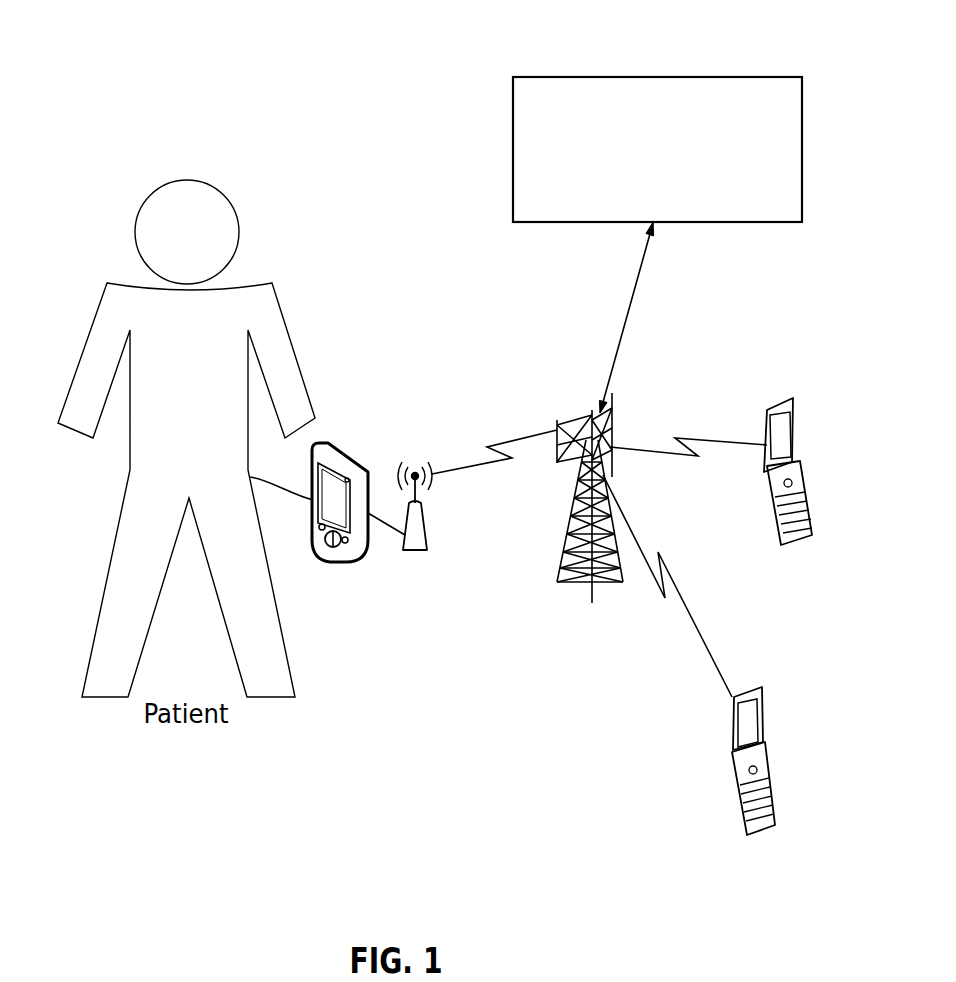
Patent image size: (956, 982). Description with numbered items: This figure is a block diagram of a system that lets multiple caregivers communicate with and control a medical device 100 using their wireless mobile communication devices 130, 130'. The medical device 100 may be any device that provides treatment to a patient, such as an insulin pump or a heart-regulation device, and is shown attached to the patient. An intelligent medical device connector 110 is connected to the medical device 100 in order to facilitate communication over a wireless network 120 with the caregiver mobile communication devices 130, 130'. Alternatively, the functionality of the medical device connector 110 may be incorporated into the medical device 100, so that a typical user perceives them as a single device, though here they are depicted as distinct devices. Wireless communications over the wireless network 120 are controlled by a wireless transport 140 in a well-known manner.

The medical device 100 is at (348, 448).
The intelligent medical device connector (MDC) 110 is at (418, 553).
The wireless network 120 is at (577, 517).
The wireless mobile communication device 130 is at (695, 761).
The wireless mobile communication device 130' is at (737, 471).
The wireless transport 140 is at (610, 75).